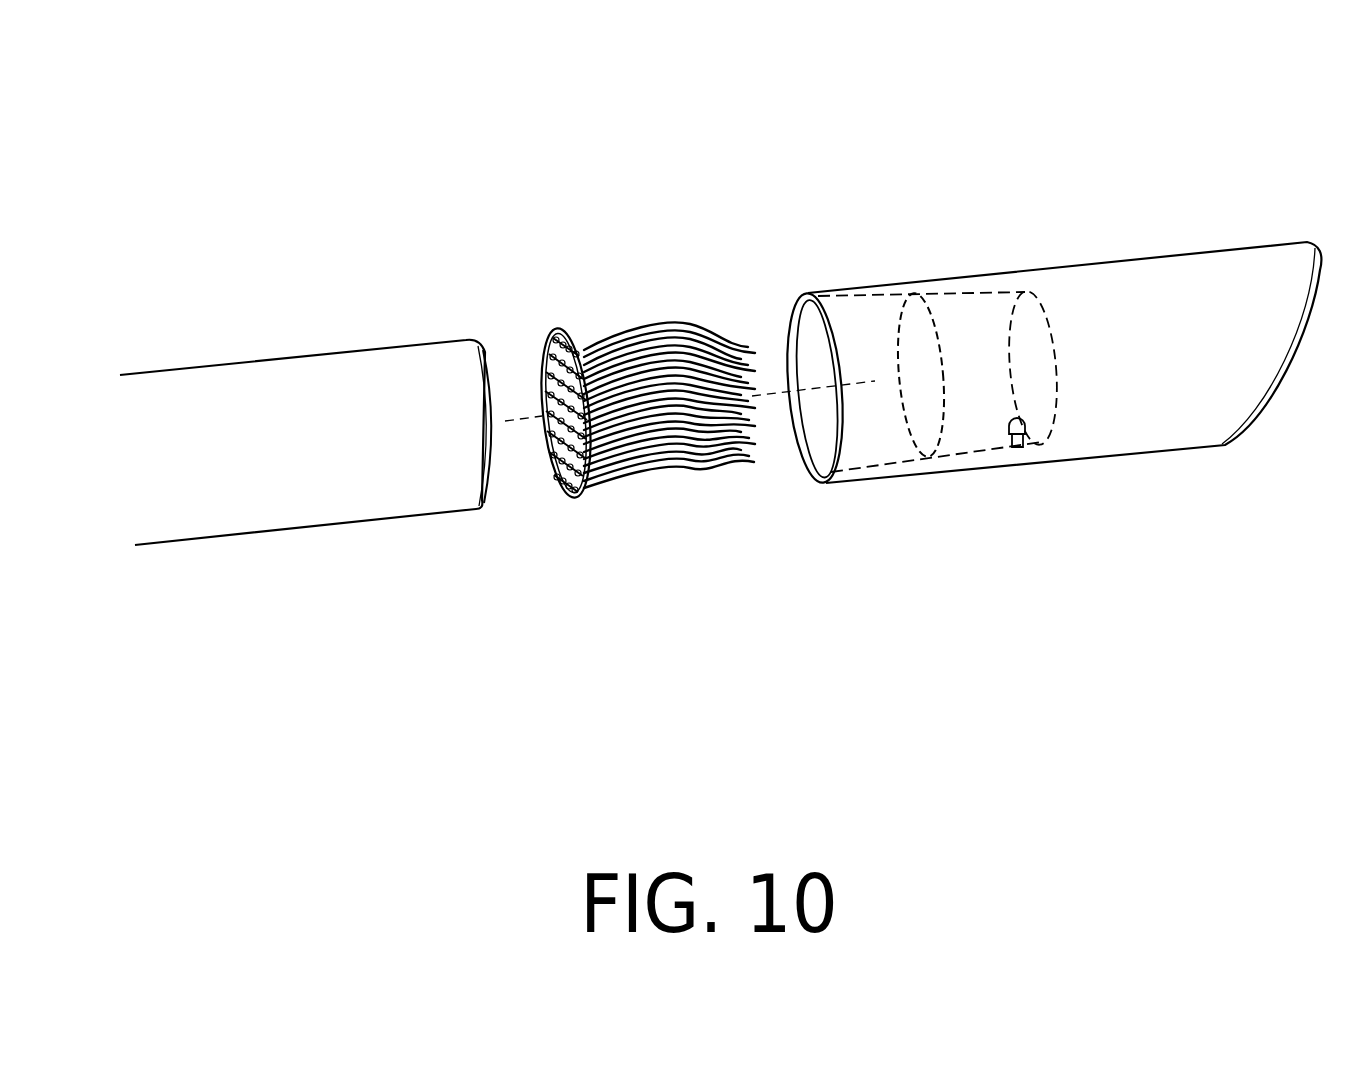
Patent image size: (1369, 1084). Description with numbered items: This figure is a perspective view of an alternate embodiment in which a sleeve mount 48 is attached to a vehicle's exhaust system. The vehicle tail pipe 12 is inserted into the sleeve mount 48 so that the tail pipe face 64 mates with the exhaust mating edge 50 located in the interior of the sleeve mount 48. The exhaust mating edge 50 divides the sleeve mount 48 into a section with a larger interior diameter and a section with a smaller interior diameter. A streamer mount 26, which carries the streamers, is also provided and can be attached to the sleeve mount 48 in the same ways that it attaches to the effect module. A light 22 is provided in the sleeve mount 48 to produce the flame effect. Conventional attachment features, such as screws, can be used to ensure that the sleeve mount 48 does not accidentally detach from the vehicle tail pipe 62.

The vehicle tail pipe 12 is at (1162, 421).
The light 22 is at (1028, 445).
The streamer mount 26 is at (580, 497).
The sleeve mount 48 is at (957, 290).
The exhaust mating edge 50 is at (930, 455).
The vehicle tail pipe 62 is at (316, 455).
The tail pipe face 64 is at (488, 360).